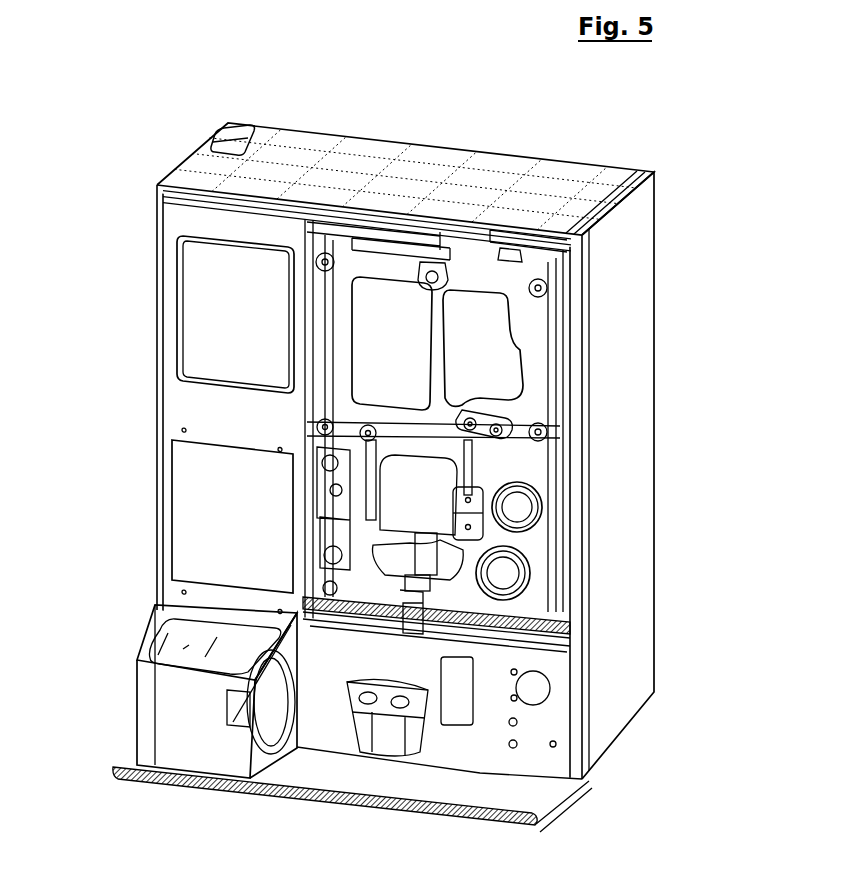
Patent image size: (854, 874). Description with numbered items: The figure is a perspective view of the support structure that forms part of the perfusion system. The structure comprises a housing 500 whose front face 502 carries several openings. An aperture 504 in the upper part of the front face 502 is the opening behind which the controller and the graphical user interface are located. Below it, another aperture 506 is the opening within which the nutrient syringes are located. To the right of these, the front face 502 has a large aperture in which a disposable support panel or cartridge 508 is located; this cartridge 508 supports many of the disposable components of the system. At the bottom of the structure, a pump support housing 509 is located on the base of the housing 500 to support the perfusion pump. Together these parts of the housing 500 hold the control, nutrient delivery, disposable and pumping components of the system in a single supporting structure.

The housing 500 is at (628, 389).
The front face 502 is at (180, 418).
The aperture 504 is at (193, 287).
The aperture 506 is at (190, 516).
The disposable support panel or cartridge 508 is at (533, 551).
The pump support housing 509 is at (183, 763).